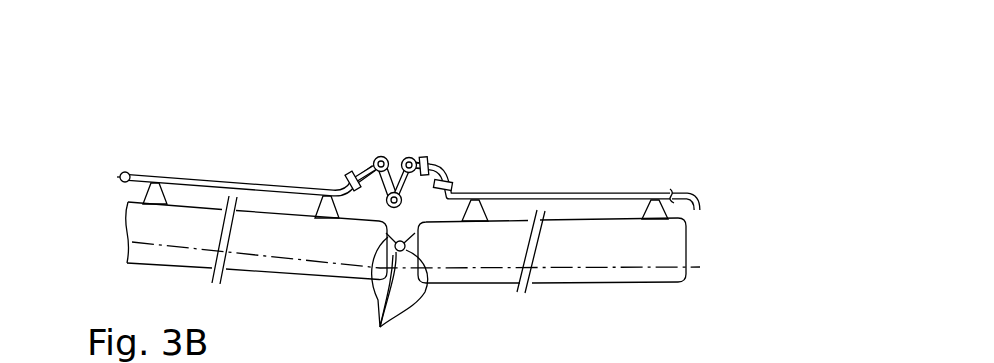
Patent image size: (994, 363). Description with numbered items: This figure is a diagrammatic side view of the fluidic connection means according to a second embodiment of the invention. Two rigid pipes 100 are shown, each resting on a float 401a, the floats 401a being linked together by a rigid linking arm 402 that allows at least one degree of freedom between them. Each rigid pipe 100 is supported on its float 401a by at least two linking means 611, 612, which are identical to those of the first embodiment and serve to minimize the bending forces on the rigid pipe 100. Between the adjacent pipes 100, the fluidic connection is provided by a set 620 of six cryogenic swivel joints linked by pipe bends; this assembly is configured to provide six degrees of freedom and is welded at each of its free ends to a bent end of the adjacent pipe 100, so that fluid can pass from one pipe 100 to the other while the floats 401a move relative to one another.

The rigid pipe 100 is at (226, 173).
The linking means 611 is at (160, 168).
The linking means 612 is at (330, 186).
The set of six cryogenic swivel joints 620 is at (405, 136).
The float 401a is at (270, 217).
The rigid linking arm 402 is at (382, 243).